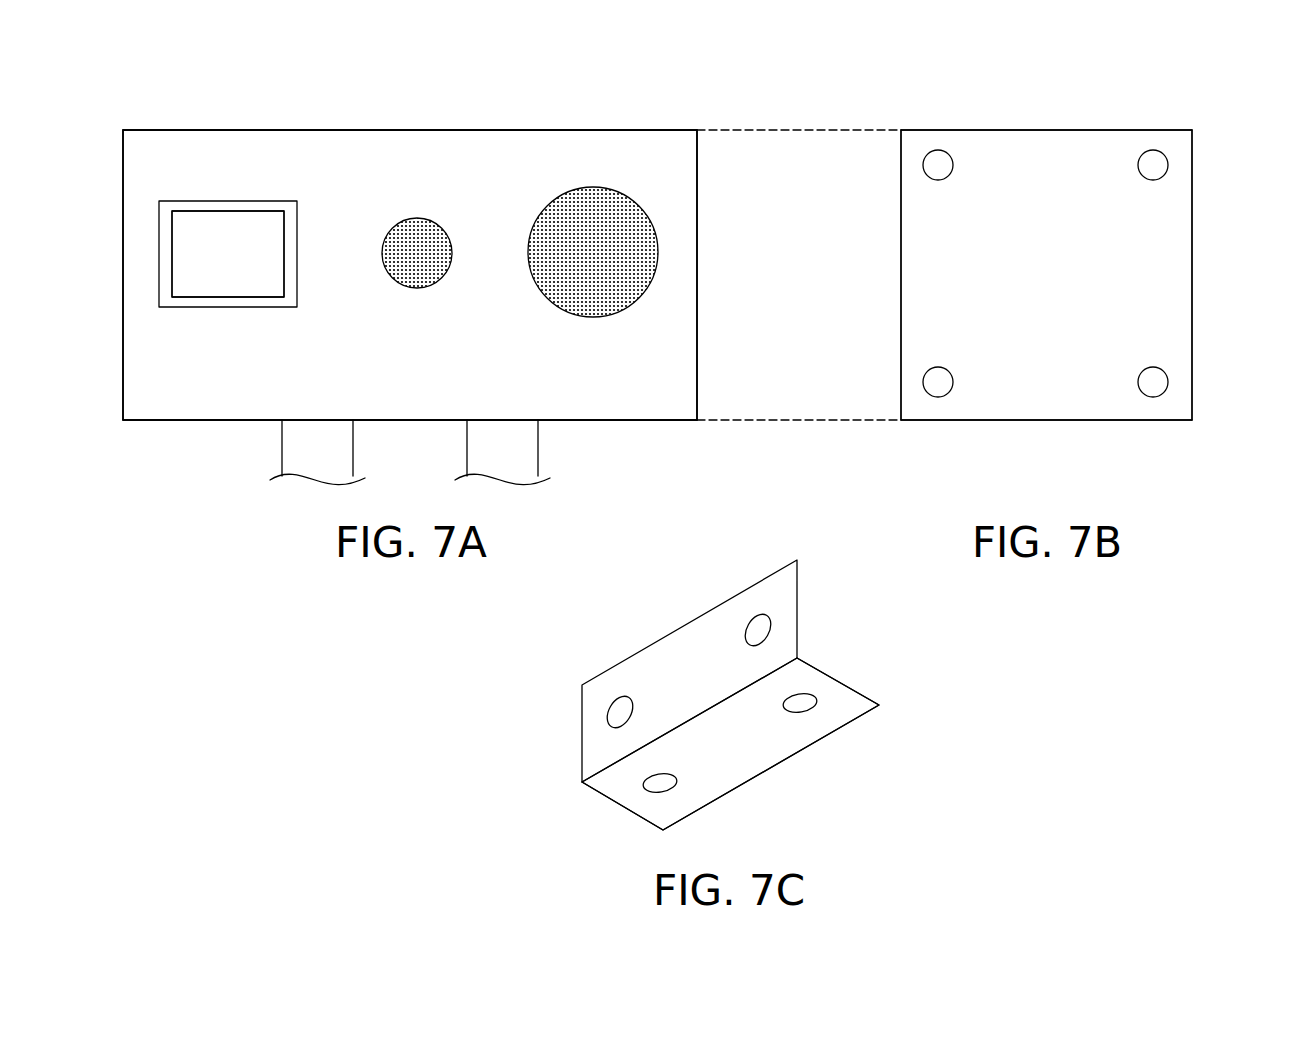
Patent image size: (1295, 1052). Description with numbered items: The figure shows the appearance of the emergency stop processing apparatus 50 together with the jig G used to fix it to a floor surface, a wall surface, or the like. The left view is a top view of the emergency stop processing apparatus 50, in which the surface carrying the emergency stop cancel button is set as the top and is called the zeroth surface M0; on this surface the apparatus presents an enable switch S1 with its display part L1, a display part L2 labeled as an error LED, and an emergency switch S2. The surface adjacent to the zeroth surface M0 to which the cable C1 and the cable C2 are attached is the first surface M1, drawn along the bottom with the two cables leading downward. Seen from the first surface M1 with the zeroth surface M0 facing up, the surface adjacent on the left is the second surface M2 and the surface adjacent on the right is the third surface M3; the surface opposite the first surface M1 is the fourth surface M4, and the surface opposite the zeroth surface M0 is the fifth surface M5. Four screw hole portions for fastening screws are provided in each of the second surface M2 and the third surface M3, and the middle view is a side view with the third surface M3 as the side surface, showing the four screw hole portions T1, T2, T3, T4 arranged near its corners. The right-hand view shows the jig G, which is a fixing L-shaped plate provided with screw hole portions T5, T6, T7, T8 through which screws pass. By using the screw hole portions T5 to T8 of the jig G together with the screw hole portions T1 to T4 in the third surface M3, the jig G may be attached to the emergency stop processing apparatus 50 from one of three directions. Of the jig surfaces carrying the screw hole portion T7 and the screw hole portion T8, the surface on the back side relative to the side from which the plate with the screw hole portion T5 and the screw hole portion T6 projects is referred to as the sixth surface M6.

In FIG. 7A, the emergency stop processing apparatus 50 is at (305, 90).
In FIG. 7A, the zeroth surface M0 is at (133, 395).
In FIG. 7B, the zeroth surface M0 is at (895, 238).
In FIG. 7A, the first surface M1 is at (212, 432).
In FIG. 7B, the first surface M1 is at (1055, 430).
In FIG. 7A, the second surface M2 is at (112, 275).
In FIG. 7A, the third surface M3 is at (708, 314).
In FIG. 7B, the third surface M3 is at (1110, 140).
In FIG. 7A, the fourth surface M4 is at (507, 120).
In FIG. 7B, the fourth surface M4 is at (1013, 118).
In FIG. 7B, the fifth surface M5 is at (1203, 272).
In FIG. 7C, the sixth surface M6 is at (765, 760).
In FIG. 7A, the enable switch S1 is at (221, 225).
In FIG. 7A, the display part L1 is at (228, 254).
In FIG. 7A, the display part L2 is at (417, 222).
In FIG. 7A, the emergency switch S2 is at (595, 195).
In FIG. 7A, the cable C1 is at (345, 450).
In FIG. 7A, the cable C2 is at (530, 450).
In FIG. 7B, the screw hole portion T1 is at (946, 165).
In FIG. 7B, the screw hole portion T2 is at (1146, 165).
In FIG. 7B, the screw hole portion T3 is at (946, 382).
In FIG. 7B, the screw hole portion T4 is at (1146, 382).
In FIG. 7C, the screw hole portion T5 is at (608, 715).
In FIG. 7C, the screw hole portion T6 is at (758, 625).
In FIG. 7C, the screw hole portion T7 is at (673, 785).
In FIG. 7C, the screw hole portion T8 is at (810, 705).
In FIG. 7C, the jig G is at (860, 600).